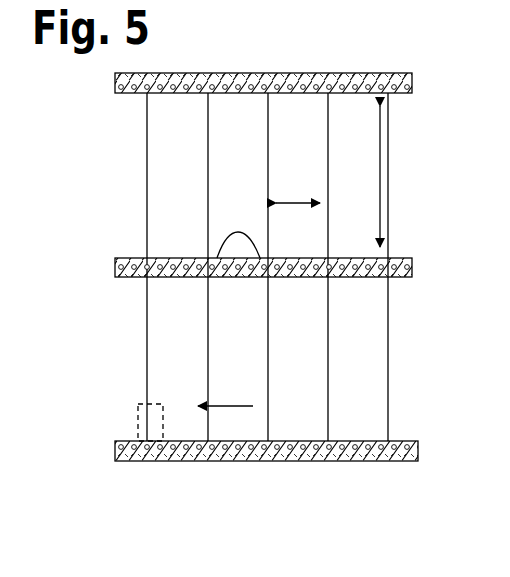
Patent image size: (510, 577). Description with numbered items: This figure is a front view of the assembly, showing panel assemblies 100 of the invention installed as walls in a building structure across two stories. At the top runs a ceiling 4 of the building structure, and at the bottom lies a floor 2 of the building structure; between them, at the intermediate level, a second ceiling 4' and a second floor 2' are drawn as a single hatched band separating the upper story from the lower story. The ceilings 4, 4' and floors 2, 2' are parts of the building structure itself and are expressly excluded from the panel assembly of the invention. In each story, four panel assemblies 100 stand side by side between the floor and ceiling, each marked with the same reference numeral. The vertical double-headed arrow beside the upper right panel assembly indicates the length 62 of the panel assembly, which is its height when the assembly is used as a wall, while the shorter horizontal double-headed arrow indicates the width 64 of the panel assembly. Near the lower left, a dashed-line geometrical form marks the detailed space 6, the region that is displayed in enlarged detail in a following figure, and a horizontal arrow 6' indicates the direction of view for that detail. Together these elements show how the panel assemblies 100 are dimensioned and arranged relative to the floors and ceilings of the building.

The ceiling of building structure 4 is at (263, 64).
The ceiling of building structure 4' is at (248, 289).
The floor of building structure 2 is at (271, 471).
The floor of building structure 2' is at (263, 277).
The detailed space 6 is at (177, 446).
The arrow indicating direction of view 6' is at (239, 454).
The length of the panel assembly 62 is at (385, 162).
The width of the panel assembly 64 is at (297, 204).
The panel assembly 100 is at (196, 179).